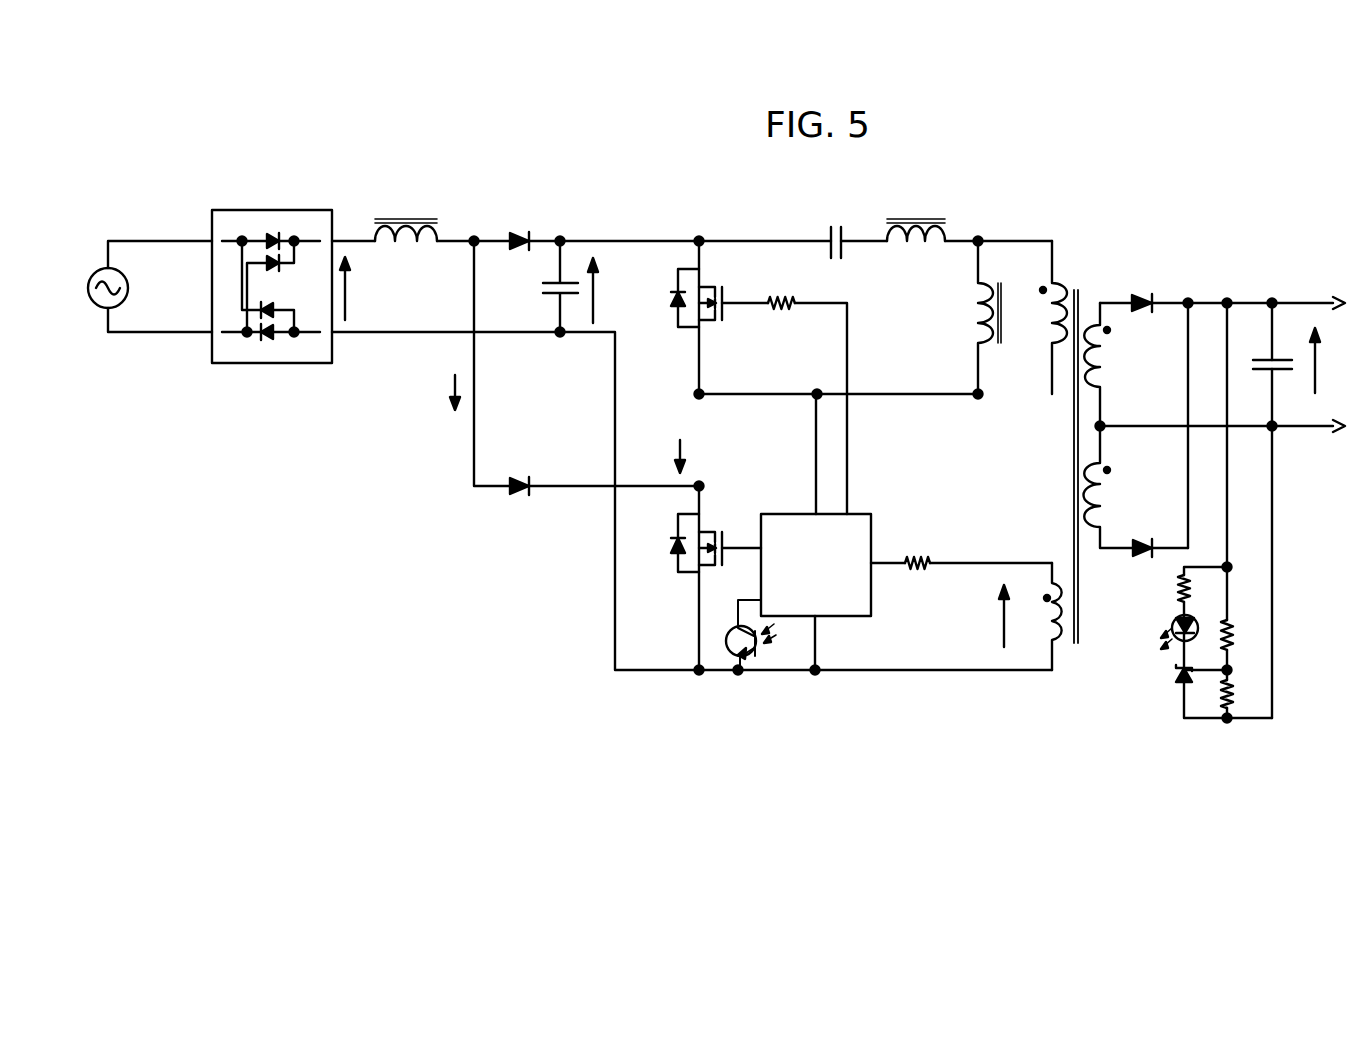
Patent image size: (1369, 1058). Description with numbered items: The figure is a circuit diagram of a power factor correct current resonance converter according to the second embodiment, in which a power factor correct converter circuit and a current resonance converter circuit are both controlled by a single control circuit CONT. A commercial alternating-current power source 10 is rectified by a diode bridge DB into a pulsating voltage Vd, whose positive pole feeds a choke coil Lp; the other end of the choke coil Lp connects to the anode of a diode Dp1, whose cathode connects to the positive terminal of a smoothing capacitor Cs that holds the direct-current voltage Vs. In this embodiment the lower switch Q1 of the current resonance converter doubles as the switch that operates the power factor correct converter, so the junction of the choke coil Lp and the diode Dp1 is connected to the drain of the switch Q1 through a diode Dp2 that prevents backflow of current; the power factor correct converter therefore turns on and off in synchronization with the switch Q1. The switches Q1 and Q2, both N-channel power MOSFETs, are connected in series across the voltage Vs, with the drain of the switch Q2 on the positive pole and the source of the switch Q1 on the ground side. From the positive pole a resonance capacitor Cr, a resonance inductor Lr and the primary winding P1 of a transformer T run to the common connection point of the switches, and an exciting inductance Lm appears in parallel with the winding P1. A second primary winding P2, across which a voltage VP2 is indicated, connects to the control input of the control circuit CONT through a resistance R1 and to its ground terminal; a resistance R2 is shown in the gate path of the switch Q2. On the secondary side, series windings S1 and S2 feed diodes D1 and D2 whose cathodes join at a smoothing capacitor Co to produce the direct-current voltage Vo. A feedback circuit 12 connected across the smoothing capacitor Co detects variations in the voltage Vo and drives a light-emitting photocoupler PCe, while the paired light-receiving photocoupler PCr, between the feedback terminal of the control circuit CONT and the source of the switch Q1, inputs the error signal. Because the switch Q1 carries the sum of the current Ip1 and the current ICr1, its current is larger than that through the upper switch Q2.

The commercial alternating-current power source 10 is at (98, 271).
The feedback circuit 12 is at (1227, 643).
The diode bridge DB is at (272, 268).
The choke coil Lp is at (406, 213).
The diode Dp1 is at (522, 223).
The diode Dp2 is at (521, 468).
The smoothing capacitor Cs is at (548, 286).
The switch Q1 is at (704, 578).
The switch Q2 is at (705, 317).
The resistance R1 is at (961, 548).
The resistor R2 is at (784, 390).
The resonance capacitor Cr is at (831, 226).
The resonance inductor Lr is at (916, 215).
The exciting inductance Lm is at (970, 317).
The winding P1 is at (1041, 317).
The second winding P2 is at (1036, 616).
The transformer T is at (1076, 446).
The winding S1 is at (1110, 364).
The winding S2 is at (1136, 487).
The diode D1 is at (1144, 287).
The diode D2 is at (1144, 533).
The smoothing capacitor Co is at (1265, 349).
The control circuit CONT is at (796, 592).
The photocoupler on light-receiving side PCr is at (750, 657).
The photocoupler on light-emitting side PCe is at (1155, 624).
The voltage of pulsating flow Vd is at (362, 288).
The direct-current voltage Vs is at (609, 290).
The direct-current voltage Vo is at (1330, 360).
The auxiliary winding voltage VP2 is at (983, 616).
The current Ip1 is at (434, 392).
The current ICr1 is at (654, 456).